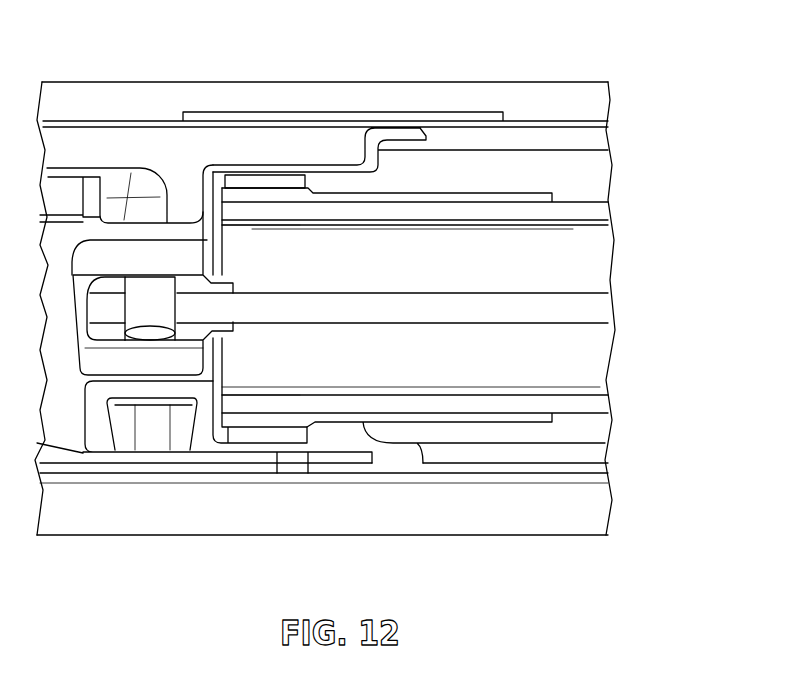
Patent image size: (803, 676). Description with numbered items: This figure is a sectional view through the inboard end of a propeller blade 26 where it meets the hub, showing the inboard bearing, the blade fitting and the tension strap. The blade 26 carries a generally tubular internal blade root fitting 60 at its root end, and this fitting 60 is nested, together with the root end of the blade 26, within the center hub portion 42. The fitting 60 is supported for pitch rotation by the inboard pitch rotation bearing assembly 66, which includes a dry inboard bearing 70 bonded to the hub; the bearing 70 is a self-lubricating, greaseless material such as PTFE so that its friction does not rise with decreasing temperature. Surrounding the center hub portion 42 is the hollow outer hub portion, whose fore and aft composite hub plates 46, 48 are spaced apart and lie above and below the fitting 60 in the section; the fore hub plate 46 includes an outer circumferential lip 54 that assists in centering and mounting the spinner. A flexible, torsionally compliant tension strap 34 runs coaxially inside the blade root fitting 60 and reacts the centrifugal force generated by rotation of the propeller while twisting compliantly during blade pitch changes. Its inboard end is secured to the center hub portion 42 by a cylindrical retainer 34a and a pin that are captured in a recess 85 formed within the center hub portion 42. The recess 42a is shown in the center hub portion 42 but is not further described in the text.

The outer circumferential lip 54 is at (587, 97).
The fore composite hub plate 46 is at (593, 123).
The inboard dry bearing 70 is at (520, 200).
The propeller blade 26 is at (592, 213).
The blade root fitting 60 is at (587, 258).
The tension strap 34 is at (592, 310).
The cylindrical retainer 34a is at (145, 302).
The center hub portion 42 is at (195, 412).
The bracket recess 42a is at (148, 435).
The recess 85 is at (110, 275).
The inboard pitch rotation bearing assembly 66 is at (290, 178).
The aft composite hub plate 48 is at (572, 468).